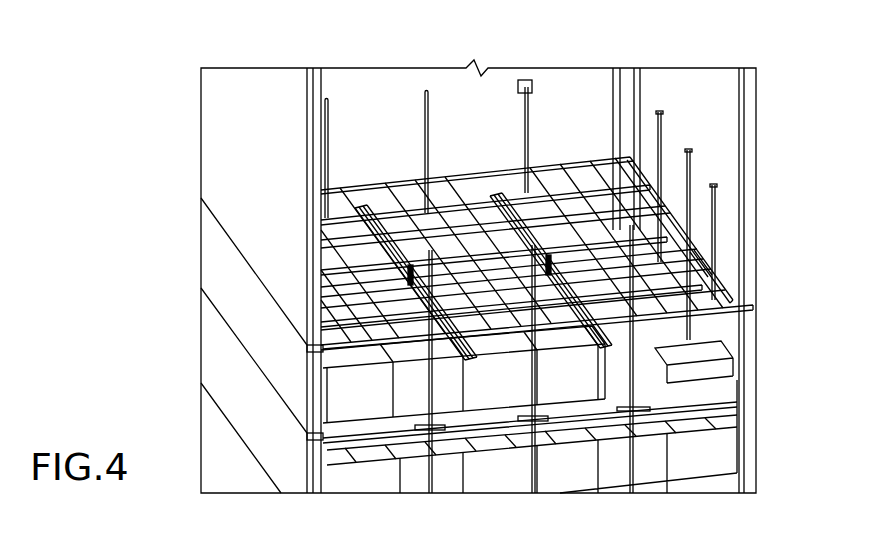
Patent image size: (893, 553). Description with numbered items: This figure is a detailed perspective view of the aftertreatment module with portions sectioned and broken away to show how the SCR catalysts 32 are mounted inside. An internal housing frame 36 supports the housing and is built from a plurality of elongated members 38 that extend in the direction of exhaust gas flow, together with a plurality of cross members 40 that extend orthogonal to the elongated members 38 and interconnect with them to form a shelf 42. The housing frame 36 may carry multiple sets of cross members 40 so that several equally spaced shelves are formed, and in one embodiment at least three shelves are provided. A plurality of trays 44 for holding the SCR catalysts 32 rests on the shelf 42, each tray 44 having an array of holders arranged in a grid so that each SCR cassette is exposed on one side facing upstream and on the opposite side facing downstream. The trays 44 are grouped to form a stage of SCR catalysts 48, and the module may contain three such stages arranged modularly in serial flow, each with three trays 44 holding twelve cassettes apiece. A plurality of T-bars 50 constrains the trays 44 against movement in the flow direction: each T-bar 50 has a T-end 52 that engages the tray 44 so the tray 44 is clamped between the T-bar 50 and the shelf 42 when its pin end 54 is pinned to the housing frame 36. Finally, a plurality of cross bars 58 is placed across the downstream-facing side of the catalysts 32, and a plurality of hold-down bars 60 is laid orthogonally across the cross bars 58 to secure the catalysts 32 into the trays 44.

The SCR catalysts 32 is at (395, 203).
The cross bars 58 is at (490, 200).
The hold-down bars 60 is at (483, 228).
The housing frame 36 is at (608, 117).
The elongated members 38 is at (628, 105).
The pin end 54 is at (688, 152).
The T-bars 50 is at (713, 186).
The cross members 40 is at (697, 253).
The shelf 42 is at (722, 264).
The trays 44 is at (710, 366).
The stage of SCR catalysts 48 is at (758, 429).
The T-end 52 is at (527, 418).